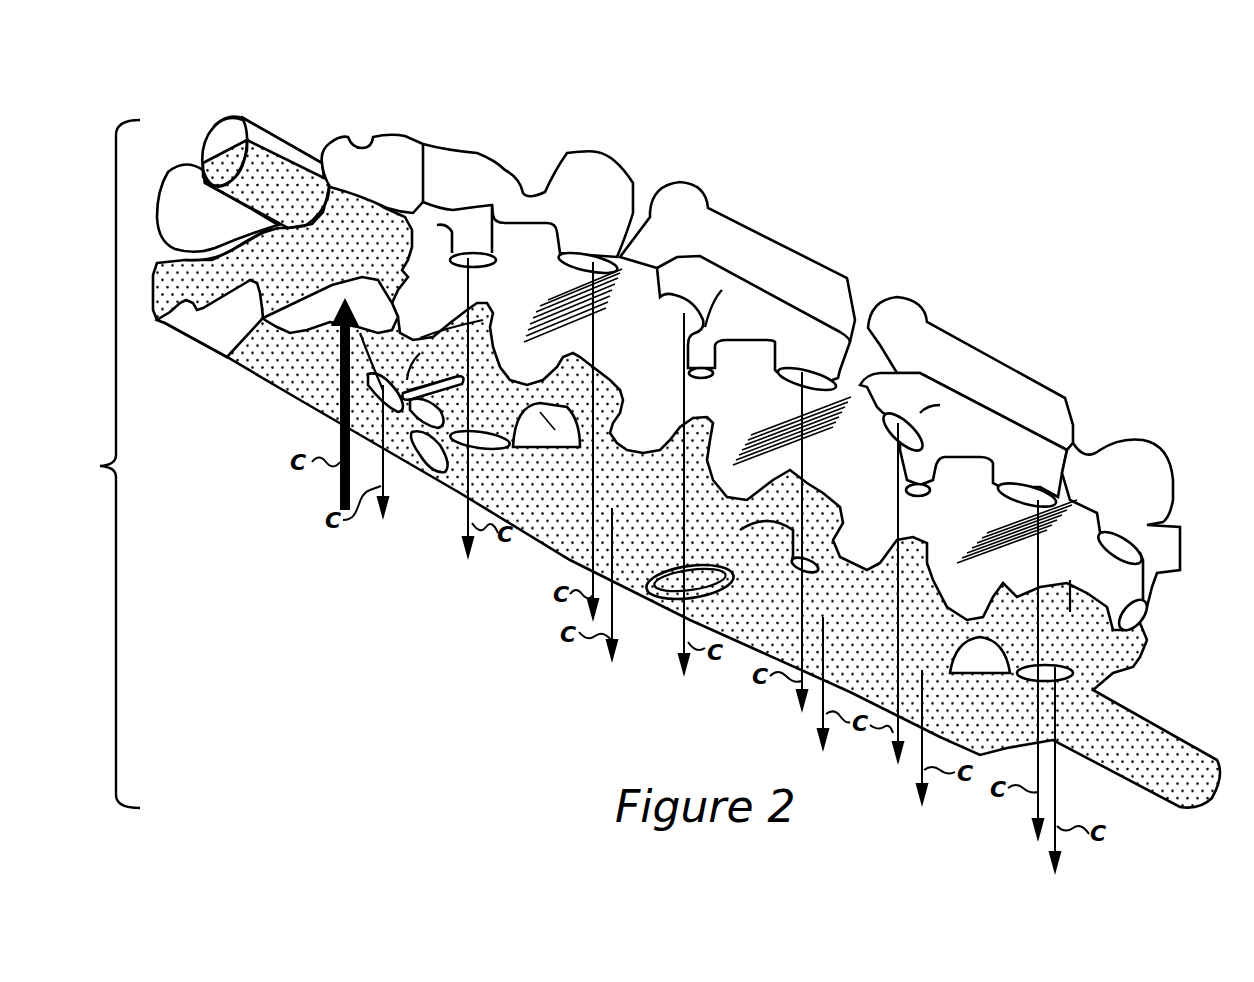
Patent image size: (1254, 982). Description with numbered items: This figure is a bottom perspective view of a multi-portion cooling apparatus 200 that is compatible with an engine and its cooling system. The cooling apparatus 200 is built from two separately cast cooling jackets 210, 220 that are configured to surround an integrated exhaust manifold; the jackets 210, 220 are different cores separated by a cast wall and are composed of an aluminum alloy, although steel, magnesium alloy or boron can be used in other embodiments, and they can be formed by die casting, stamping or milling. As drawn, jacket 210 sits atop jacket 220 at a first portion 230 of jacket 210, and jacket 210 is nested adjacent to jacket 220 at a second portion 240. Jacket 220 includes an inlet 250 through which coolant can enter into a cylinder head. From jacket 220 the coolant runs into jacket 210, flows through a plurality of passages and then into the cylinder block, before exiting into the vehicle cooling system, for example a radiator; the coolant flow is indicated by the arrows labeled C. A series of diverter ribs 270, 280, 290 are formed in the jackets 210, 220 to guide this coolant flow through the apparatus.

The cooling apparatus 200 is at (90, 464).
The cooling jacket 210 is at (990, 382).
The cooling jacket 220 is at (565, 530).
The first portion 230 is at (272, 100).
The second portion 240 is at (666, 148).
The inlet 250 is at (307, 313).
The diverter rib 270 is at (415, 465).
The diverter rib 280 is at (437, 473).
The diverter rib 290 is at (655, 478).